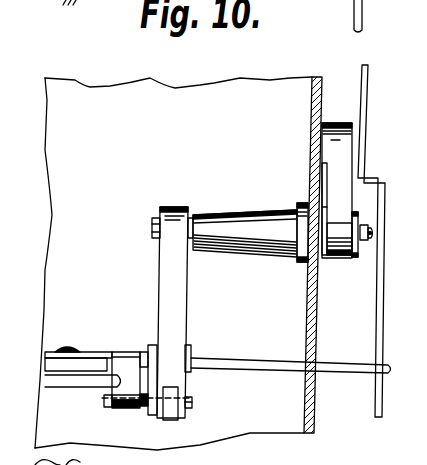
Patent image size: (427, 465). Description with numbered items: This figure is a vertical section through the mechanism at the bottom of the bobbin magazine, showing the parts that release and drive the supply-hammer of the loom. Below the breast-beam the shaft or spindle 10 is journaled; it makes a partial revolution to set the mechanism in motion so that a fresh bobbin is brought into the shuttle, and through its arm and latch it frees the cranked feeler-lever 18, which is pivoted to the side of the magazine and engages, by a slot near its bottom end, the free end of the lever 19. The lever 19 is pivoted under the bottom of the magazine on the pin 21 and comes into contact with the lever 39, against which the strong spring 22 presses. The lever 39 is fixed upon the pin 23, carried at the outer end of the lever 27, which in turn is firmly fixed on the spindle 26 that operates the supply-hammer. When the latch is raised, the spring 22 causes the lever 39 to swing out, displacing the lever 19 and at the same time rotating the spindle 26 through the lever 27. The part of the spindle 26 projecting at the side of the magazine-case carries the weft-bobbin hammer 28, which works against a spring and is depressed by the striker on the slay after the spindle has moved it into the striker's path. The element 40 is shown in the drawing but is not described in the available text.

The shaft or spindle 10 is at (364, 10).
The cranked feeler-lever 18 is at (381, 312).
The lever 19 is at (229, 361).
The pin 21 is at (66, 351).
The spring 22 is at (78, 380).
The pin 23 is at (191, 405).
The spindle 26 is at (233, 213).
The lever 27 is at (176, 291).
The weft-bobbin hammer 28 is at (325, 127).
The lever 39 is at (116, 408).
The block 40 is at (172, 416).